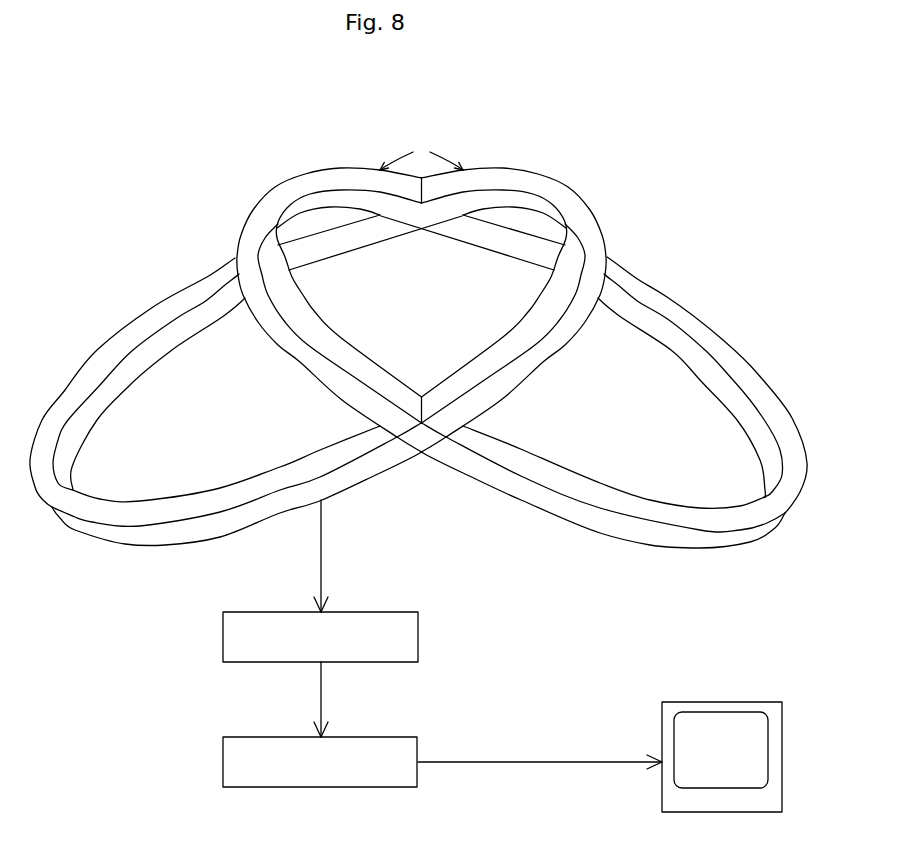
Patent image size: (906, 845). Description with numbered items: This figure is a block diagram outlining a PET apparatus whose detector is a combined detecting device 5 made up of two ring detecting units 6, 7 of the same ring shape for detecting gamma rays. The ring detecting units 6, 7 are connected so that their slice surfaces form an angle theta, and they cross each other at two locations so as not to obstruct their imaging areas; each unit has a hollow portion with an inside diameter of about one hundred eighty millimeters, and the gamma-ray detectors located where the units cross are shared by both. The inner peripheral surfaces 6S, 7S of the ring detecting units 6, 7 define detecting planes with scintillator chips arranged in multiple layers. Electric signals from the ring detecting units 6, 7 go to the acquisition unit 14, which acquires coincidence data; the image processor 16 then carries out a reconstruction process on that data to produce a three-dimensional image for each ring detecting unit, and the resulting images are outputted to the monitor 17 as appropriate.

The combined detecting device 5 is at (106, 197).
The ring detecting unit 6 is at (332, 170).
The ring detecting unit 7 is at (521, 170).
The inner peripheral surface 6S is at (333, 208).
The inner peripheral surface 7S is at (510, 208).
The acquisition unit 14 is at (394, 612).
The image processor 16 is at (394, 737).
The monitor 17 is at (735, 702).